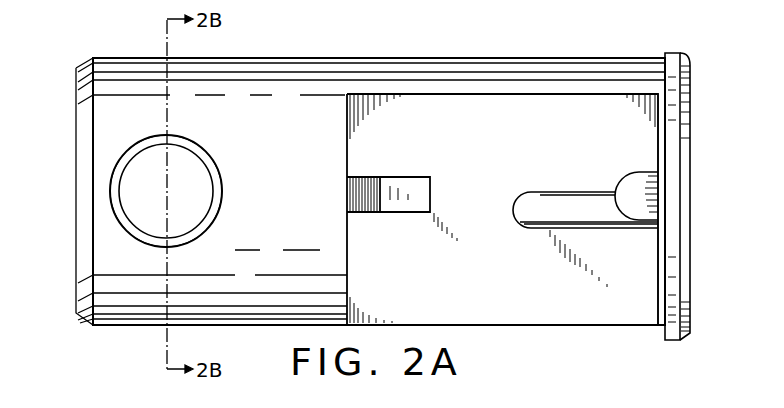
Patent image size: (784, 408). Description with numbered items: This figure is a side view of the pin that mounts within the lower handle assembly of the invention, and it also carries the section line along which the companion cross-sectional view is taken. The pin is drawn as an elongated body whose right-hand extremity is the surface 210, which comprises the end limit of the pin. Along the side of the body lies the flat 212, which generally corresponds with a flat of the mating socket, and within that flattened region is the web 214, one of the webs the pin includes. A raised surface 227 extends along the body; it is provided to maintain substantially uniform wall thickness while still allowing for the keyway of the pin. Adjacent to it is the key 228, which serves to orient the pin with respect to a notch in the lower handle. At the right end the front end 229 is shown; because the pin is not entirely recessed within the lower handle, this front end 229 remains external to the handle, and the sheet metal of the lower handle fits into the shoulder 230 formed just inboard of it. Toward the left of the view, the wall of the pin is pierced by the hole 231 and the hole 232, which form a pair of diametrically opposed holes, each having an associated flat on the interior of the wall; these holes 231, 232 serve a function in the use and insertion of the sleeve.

The surface 210 is at (690, 120).
The flat 212 is at (528, 276).
The web 214 is at (397, 180).
The raised surface 227 is at (545, 200).
The key 228 is at (645, 192).
The front end 229 is at (672, 60).
The shoulder 230 is at (665, 60).
The hole 231 is at (204, 158).
The hole 232 is at (222, 187).